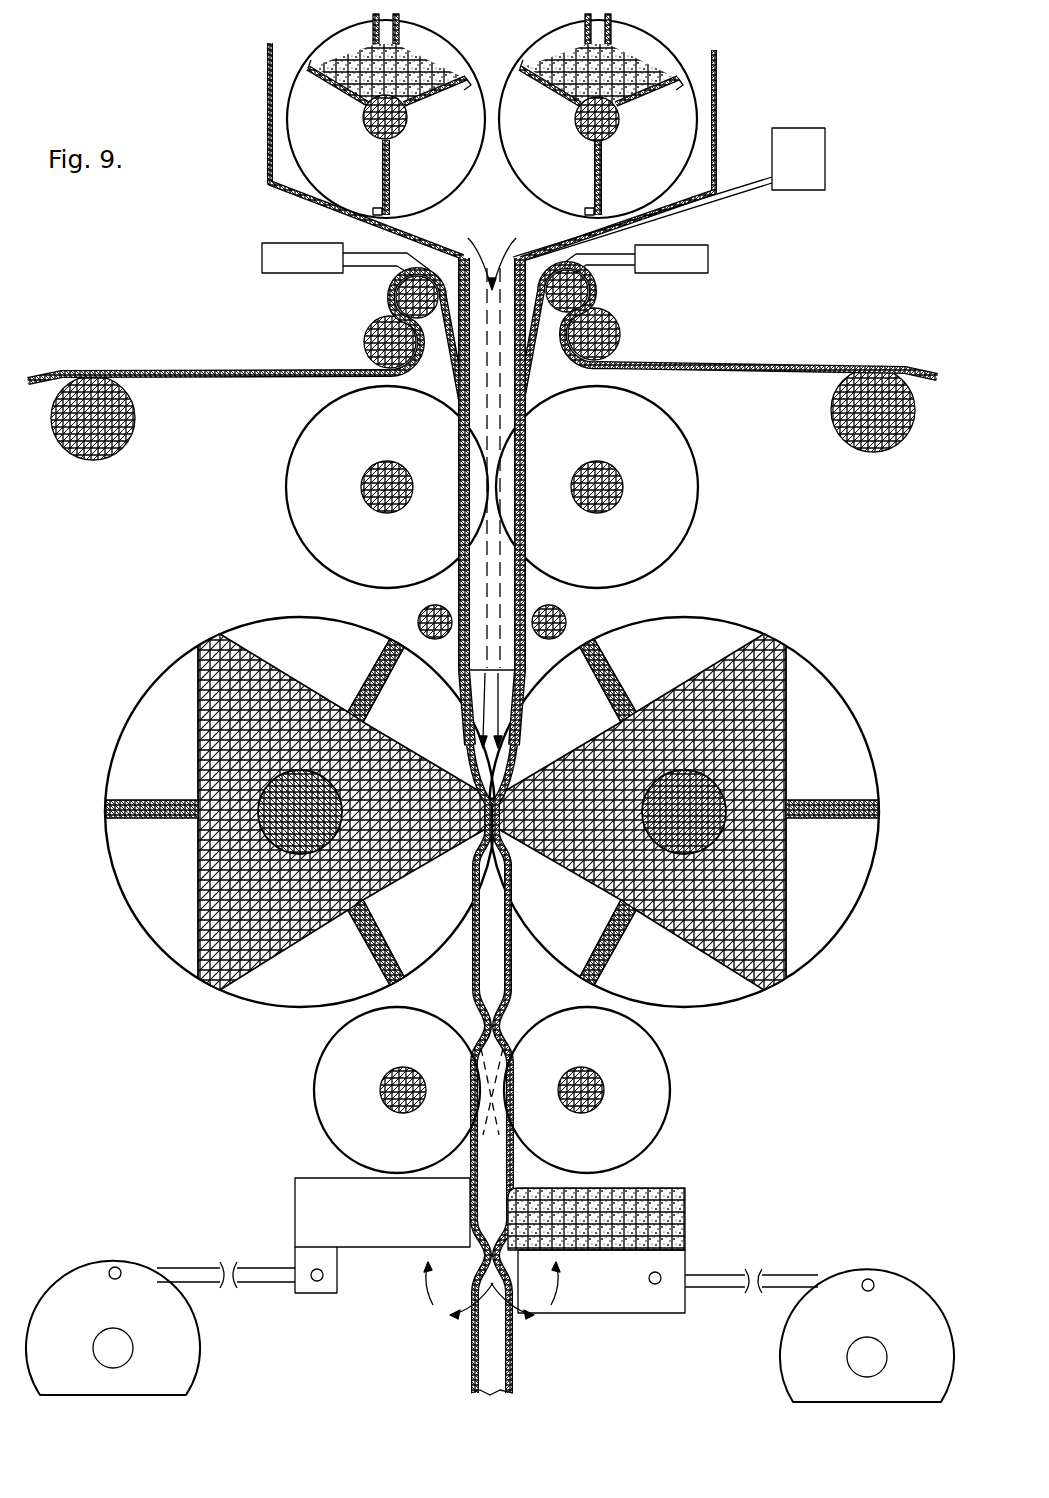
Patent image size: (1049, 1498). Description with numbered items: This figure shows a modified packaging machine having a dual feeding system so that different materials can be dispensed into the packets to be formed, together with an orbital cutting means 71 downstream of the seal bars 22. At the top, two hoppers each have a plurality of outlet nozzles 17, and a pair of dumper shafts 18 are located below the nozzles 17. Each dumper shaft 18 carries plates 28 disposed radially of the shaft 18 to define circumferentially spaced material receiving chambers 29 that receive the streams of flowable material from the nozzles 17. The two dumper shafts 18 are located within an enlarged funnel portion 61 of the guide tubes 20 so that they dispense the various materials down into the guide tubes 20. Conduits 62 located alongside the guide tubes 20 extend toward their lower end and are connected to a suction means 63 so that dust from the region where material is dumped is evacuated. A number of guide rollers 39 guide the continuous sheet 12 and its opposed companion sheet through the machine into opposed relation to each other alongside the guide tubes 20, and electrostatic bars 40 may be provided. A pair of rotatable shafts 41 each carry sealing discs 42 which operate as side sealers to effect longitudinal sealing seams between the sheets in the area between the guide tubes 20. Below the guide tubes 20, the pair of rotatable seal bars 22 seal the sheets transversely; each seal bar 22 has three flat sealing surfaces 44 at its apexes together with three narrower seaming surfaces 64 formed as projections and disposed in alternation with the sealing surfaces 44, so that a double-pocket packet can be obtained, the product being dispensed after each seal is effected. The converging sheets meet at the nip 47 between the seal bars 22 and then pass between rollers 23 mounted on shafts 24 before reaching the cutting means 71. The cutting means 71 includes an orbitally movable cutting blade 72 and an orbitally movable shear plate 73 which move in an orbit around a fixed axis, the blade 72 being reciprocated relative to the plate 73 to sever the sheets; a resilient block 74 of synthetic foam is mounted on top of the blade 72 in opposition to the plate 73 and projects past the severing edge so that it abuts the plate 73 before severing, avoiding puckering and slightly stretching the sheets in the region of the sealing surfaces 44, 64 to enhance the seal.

The outlet nozzles 17 is at (400, 32).
The material receiving chambers 29 is at (382, 81).
The dumper shaft 18 is at (366, 128).
The plates 28 is at (428, 106).
The enlarged funnel portion 61 is at (722, 85).
The conduits 62 is at (665, 216).
The suction means 63 is at (797, 186).
The guide rollers 39 is at (383, 318).
The continuous sheet 12 is at (716, 367).
The sealing discs 42 is at (308, 427).
The rotatable shafts 41 is at (370, 512).
The electrostatic bars 40 is at (418, 616).
The guide tubes 20 is at (512, 658).
The flat sealing surfaces 44 is at (213, 633).
The seaming surfaces 64 is at (108, 800).
The seal bars 22 is at (497, 808).
The nip 47 is at (457, 813).
The feed rollers 23 is at (320, 1050).
The feed roller shafts 24 is at (390, 1108).
The shear plate 73 is at (303, 1197).
The resilient block 74 is at (668, 1212).
The orbital cutting means 71 is at (737, 1244).
The cutting blade 72 is at (609, 1303).